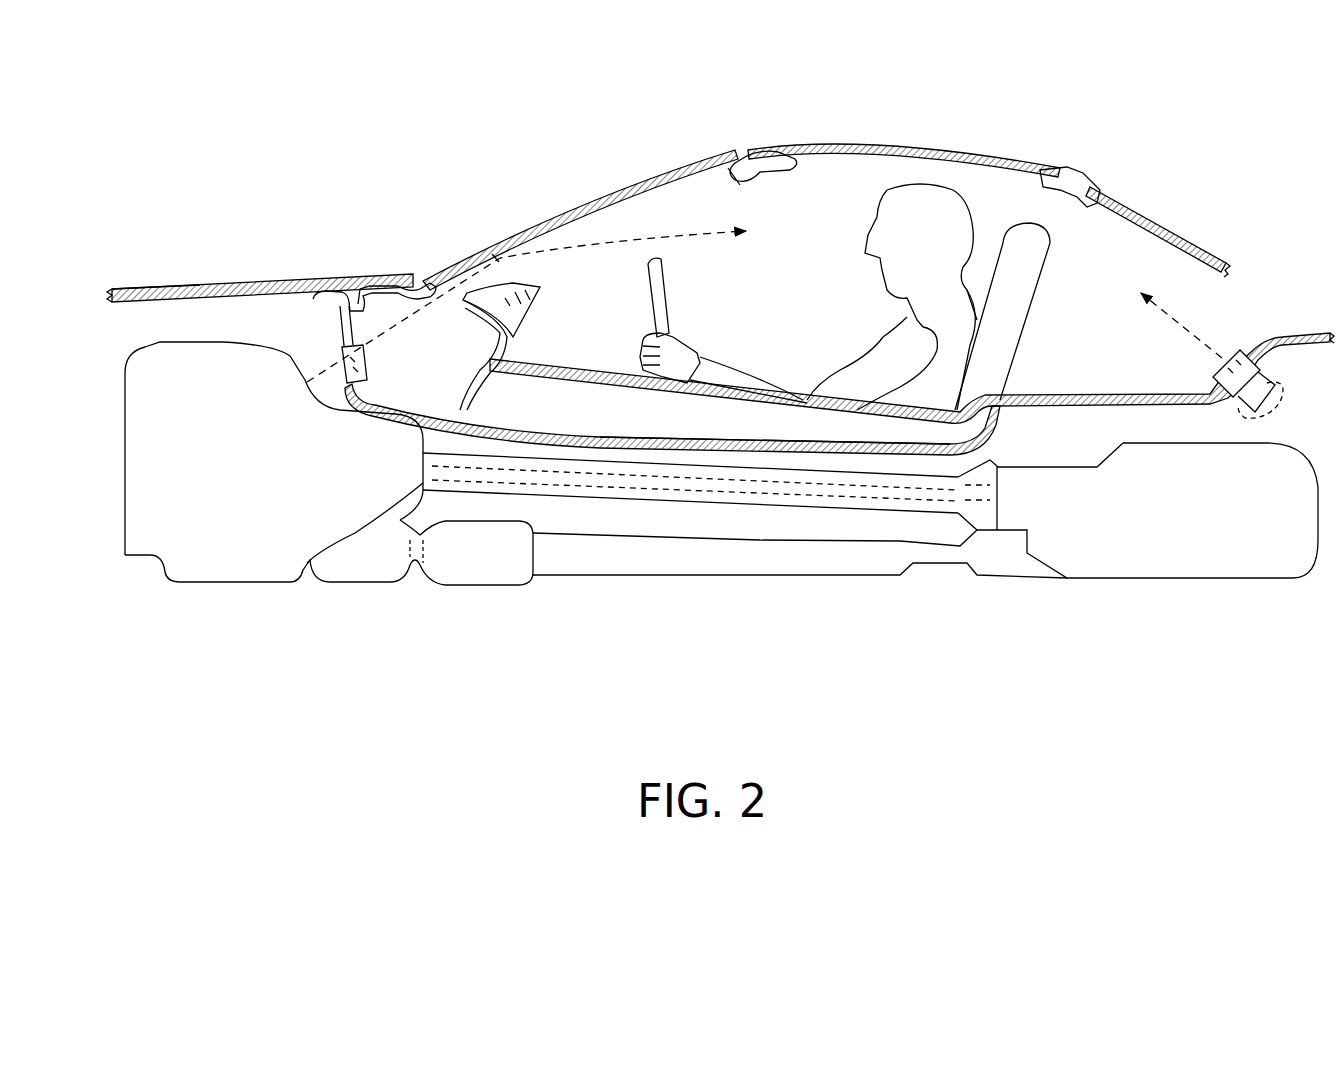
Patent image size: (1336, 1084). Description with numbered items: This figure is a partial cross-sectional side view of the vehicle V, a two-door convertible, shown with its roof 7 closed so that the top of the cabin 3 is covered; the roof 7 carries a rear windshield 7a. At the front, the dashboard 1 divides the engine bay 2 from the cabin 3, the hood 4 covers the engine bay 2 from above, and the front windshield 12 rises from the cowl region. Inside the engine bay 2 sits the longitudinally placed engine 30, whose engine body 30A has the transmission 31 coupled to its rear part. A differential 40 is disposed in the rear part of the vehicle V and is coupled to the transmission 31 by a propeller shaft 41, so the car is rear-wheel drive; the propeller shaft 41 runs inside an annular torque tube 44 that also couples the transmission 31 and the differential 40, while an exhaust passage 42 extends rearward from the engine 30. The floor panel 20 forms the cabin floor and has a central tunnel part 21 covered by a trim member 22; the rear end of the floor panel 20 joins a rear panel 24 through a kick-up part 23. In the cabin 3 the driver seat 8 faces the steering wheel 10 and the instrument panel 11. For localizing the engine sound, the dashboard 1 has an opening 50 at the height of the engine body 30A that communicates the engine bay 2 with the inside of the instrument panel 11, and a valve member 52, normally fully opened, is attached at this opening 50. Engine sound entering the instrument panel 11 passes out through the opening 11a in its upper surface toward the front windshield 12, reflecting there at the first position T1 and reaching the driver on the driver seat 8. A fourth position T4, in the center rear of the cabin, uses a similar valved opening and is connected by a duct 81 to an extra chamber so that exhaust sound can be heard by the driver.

The dashboard 1 is at (330, 330).
The engine bay 2 is at (177, 313).
The cabin 3 is at (777, 345).
The hood 4 is at (130, 288).
The roof 7 is at (927, 145).
The rear windshield 7a is at (1160, 217).
The driver seat 8 is at (1018, 303).
The steering wheel 10 is at (668, 292).
The instrument panel 11 is at (480, 383).
The opening 11a is at (443, 293).
The front windshield 12 is at (597, 200).
The floor panel 20 is at (753, 455).
The tunnel part 21 is at (775, 440).
The trim member 22 is at (807, 420).
The kick-up part 23 is at (983, 420).
The rear panel 24 is at (1083, 407).
The engine 30 is at (140, 484).
The engine body 30A is at (93, 590).
The transmission 31 is at (350, 507).
The differential 40 is at (1207, 557).
The propeller shaft 41 is at (620, 503).
The exhaust passage 42 is at (667, 553).
The torque tube 44 is at (707, 503).
The opening 50 is at (337, 400).
The valve member 52 is at (366, 347).
The duct 81 is at (1247, 394).
The first position T1 is at (497, 252).
The fourth position T4 is at (1215, 367).
The vehicle V is at (1257, 173).